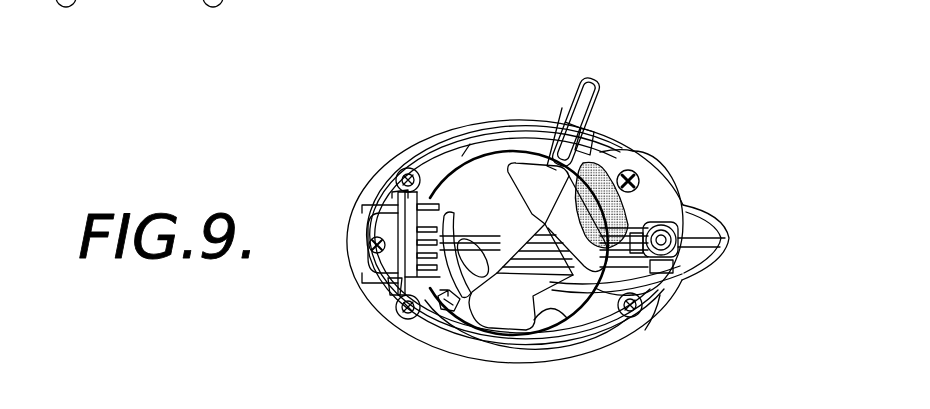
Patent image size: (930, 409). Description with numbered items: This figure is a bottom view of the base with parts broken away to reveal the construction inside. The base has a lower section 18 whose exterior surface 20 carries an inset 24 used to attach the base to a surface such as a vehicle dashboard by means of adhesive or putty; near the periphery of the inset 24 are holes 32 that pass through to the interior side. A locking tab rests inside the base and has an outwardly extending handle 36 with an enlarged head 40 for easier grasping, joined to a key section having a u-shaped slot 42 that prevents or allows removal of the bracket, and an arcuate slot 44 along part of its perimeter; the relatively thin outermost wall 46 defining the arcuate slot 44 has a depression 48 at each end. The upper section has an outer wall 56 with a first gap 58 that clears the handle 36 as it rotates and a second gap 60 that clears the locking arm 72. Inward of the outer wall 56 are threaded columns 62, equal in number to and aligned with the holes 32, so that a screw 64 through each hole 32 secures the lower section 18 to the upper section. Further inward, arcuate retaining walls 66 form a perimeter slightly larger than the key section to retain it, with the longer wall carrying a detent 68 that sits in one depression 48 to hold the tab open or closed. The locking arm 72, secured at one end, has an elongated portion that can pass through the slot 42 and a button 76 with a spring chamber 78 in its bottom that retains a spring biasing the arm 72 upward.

The lower section 18 is at (693, 203).
The exterior surface 20 is at (664, 191).
The inset 24 is at (594, 170).
The holes 32 is at (634, 176).
The handle 36 is at (563, 120).
The enlarged head 40 is at (597, 80).
The u-shaped slot 42 is at (545, 305).
The arcuate slot 44 is at (456, 300).
The outermost wall 46 is at (393, 318).
The depression 48 is at (422, 229).
The outer wall 56 is at (352, 249).
The first gap 58 is at (447, 136).
The second gap 60 is at (688, 276).
The threaded columns 62 is at (403, 170).
The screw 64 is at (662, 172).
The arcuate retaining walls 66 is at (458, 176).
The detent 68 is at (426, 320).
The locking arm 72 is at (722, 216).
The button 76 is at (716, 258).
The spring chamber 78 is at (725, 238).